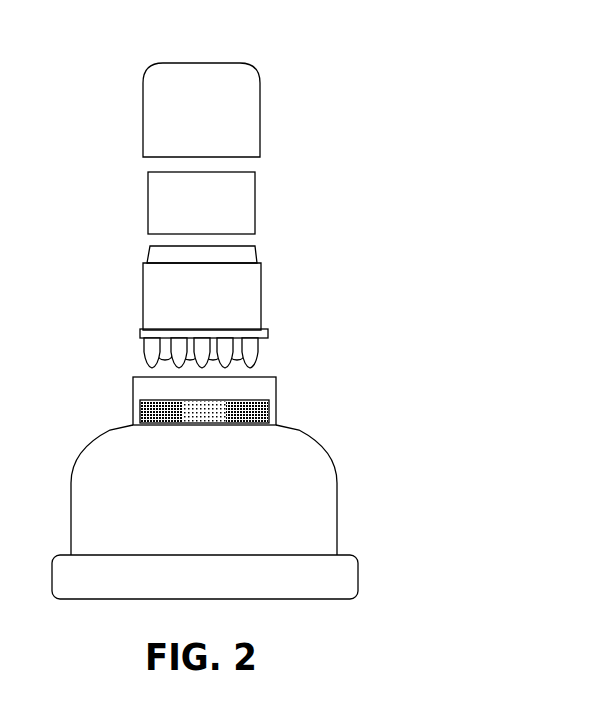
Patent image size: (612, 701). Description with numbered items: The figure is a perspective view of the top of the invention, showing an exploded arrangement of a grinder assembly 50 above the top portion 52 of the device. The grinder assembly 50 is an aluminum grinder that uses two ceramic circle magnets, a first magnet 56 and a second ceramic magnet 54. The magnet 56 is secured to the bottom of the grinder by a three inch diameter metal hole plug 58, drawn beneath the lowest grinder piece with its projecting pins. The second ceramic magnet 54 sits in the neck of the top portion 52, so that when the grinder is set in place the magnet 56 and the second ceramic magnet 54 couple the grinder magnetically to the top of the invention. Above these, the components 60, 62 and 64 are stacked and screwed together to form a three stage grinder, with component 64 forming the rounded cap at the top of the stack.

The grinder assembly 50 is at (400, 58).
The top portion 52 is at (310, 438).
The second ceramic magnet 54 is at (140, 413).
The ceramic magnet 56 is at (257, 355).
The metal hole plug 58 is at (140, 333).
The grinder component 60 is at (258, 290).
The grinder component 62 is at (147, 203).
The grinder component 64 is at (258, 92).